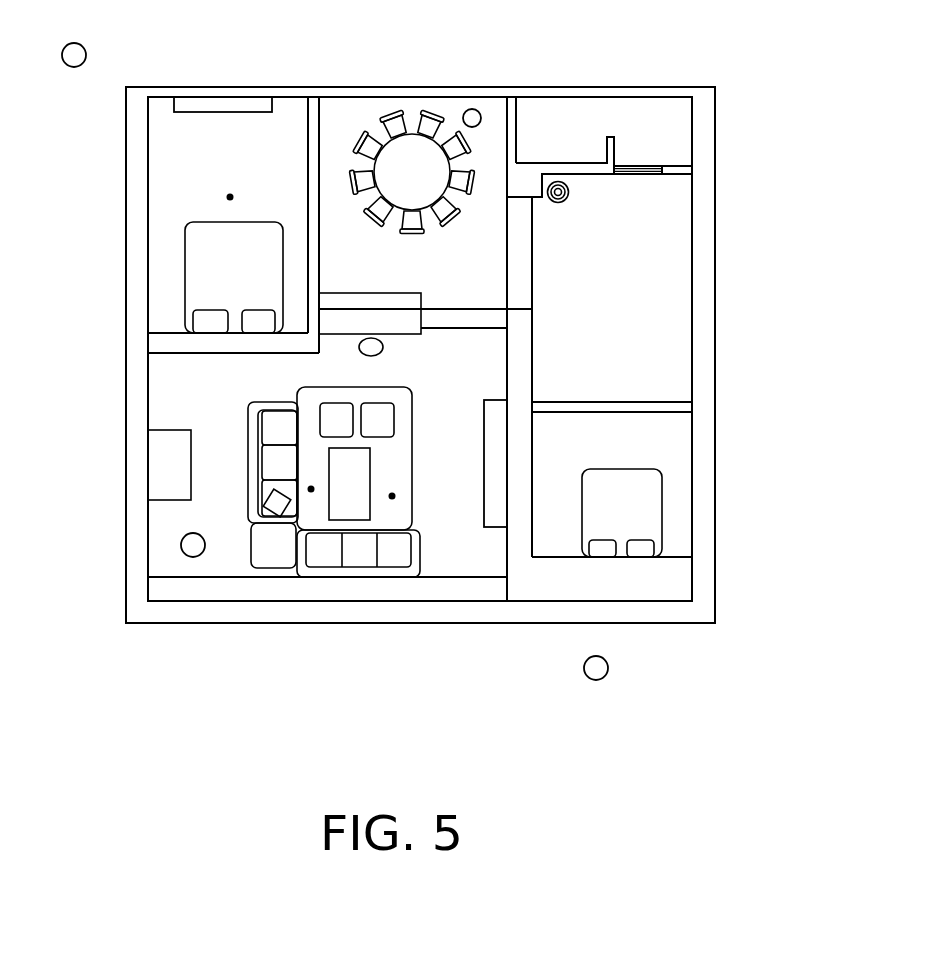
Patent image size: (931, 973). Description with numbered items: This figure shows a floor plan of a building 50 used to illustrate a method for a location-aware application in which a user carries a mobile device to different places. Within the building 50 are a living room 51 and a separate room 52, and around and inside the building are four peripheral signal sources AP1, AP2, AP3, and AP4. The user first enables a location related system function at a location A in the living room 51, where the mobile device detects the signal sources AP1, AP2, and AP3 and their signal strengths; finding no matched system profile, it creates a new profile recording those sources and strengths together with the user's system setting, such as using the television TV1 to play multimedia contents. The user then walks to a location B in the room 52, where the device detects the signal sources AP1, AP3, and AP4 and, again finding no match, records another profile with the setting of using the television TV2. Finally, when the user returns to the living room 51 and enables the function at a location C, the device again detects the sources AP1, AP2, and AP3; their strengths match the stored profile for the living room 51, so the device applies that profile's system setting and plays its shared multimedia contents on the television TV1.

The building 50 is at (709, 68).
The living room 51 is at (445, 508).
The room 52 is at (292, 113).
The television TV1 is at (498, 515).
The television TV2 is at (186, 106).
The signal source AP1 is at (195, 528).
The signal source AP2 is at (601, 687).
The signal source AP3 is at (472, 109).
The signal source AP4 is at (67, 37).
The location A is at (392, 511).
The location B is at (242, 184).
The location C is at (310, 508).